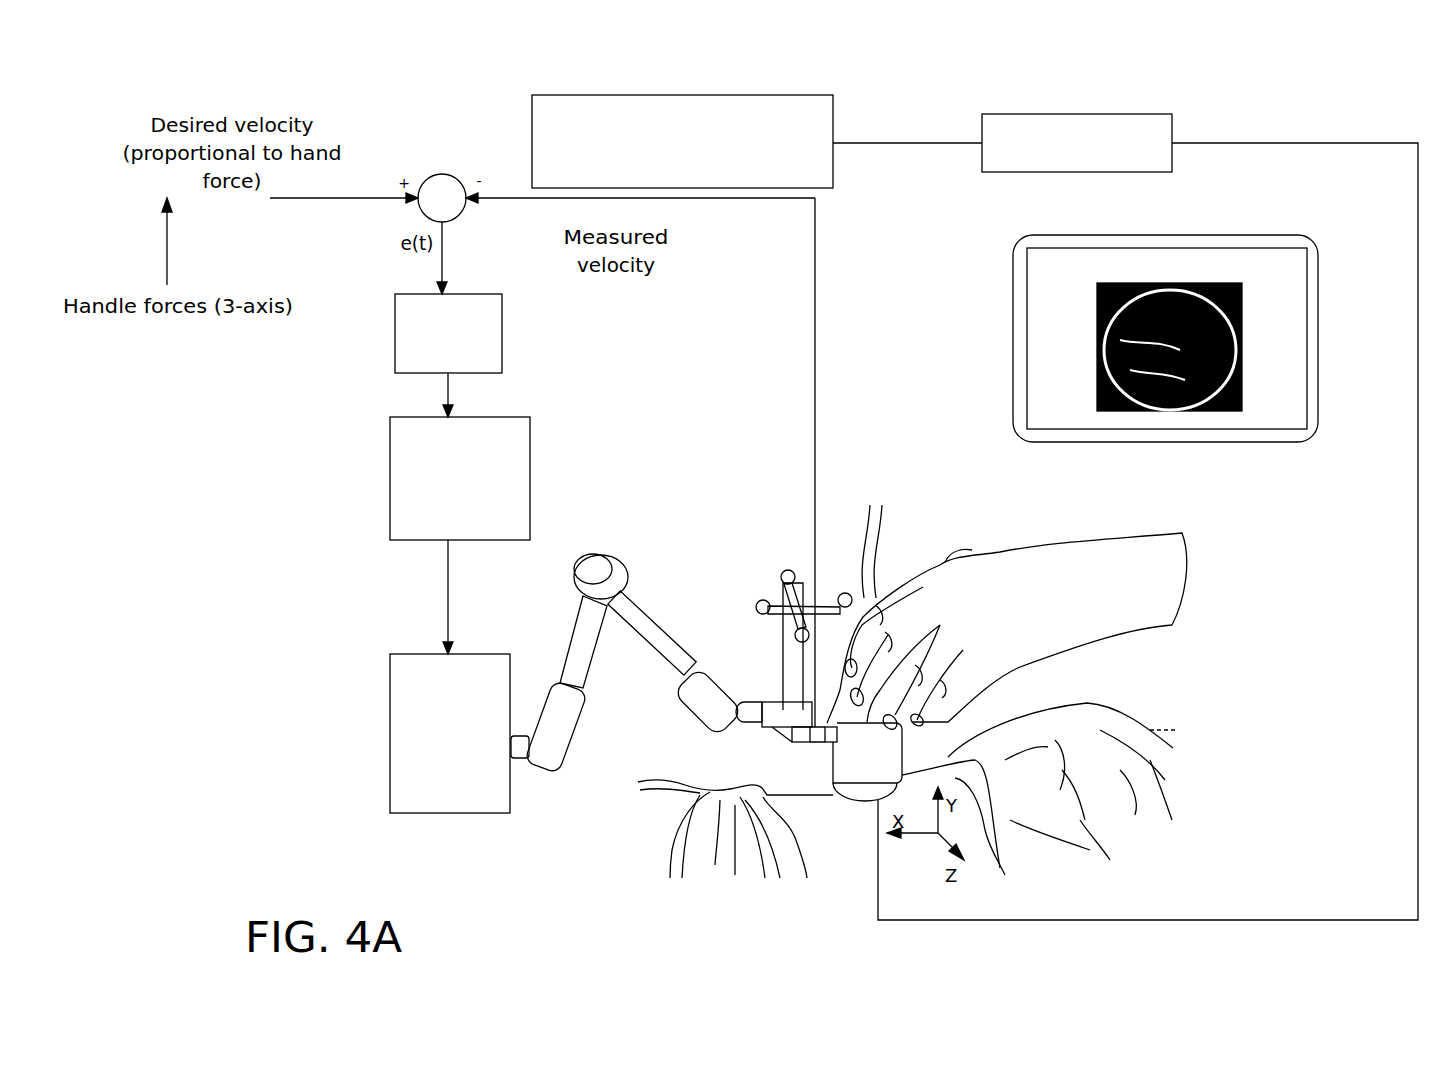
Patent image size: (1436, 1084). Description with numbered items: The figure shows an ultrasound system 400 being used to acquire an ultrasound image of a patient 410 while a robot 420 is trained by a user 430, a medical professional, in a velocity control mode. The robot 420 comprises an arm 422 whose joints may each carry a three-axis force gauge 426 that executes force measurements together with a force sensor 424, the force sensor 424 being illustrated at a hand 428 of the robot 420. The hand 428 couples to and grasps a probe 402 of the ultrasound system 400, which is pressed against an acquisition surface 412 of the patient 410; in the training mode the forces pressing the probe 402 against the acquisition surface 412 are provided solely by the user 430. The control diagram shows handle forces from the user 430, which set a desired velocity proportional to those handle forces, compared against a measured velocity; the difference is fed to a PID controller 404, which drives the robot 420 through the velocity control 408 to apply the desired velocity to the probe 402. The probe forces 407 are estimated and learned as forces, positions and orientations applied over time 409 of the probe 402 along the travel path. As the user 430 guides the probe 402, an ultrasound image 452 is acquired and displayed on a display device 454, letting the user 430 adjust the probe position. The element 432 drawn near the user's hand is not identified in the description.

The ultrasound system 400 is at (1372, 73).
The probe 402 is at (898, 772).
The PID controller 404 is at (395, 296).
The probe forces 407 is at (982, 114).
The velocity control 408 is at (390, 417).
The forces, positions, and orientations applied over time 409 is at (532, 96).
The patient 410 is at (1140, 730).
The acquisition surface 412 is at (820, 798).
The robot 420 is at (386, 648).
The arm 422 is at (641, 618).
The force sensor 424 is at (806, 744).
The three-axis force gauge 426 is at (786, 570).
The hand 428 is at (829, 744).
The user 430 is at (1175, 532).
The handle 432 is at (958, 554).
The ultrasound image 452 is at (1097, 345).
The display device 454 is at (1013, 290).